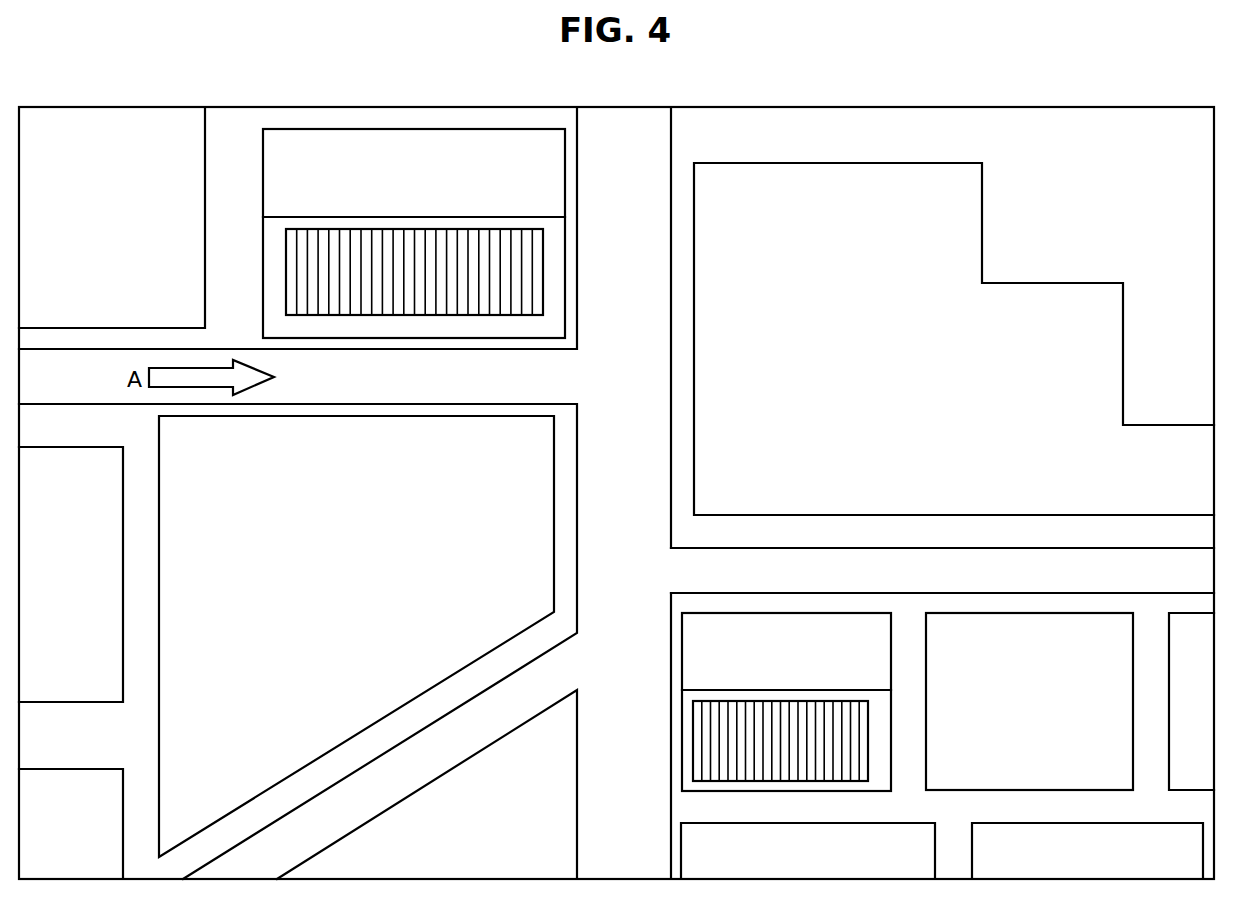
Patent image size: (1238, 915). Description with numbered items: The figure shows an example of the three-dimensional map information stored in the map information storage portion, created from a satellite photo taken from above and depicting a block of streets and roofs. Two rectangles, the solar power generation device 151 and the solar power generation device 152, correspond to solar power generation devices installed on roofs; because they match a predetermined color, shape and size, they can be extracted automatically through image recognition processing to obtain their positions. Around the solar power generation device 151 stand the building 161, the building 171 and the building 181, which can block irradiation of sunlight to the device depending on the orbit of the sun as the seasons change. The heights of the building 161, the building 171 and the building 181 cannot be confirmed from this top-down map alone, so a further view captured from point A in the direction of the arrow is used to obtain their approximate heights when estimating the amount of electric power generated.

The building 171 is at (112, 123).
The solar power generation device 151 is at (412, 228).
The building 161 is at (511, 420).
The building 181 is at (790, 177).
The solar power generation device 152 is at (777, 700).